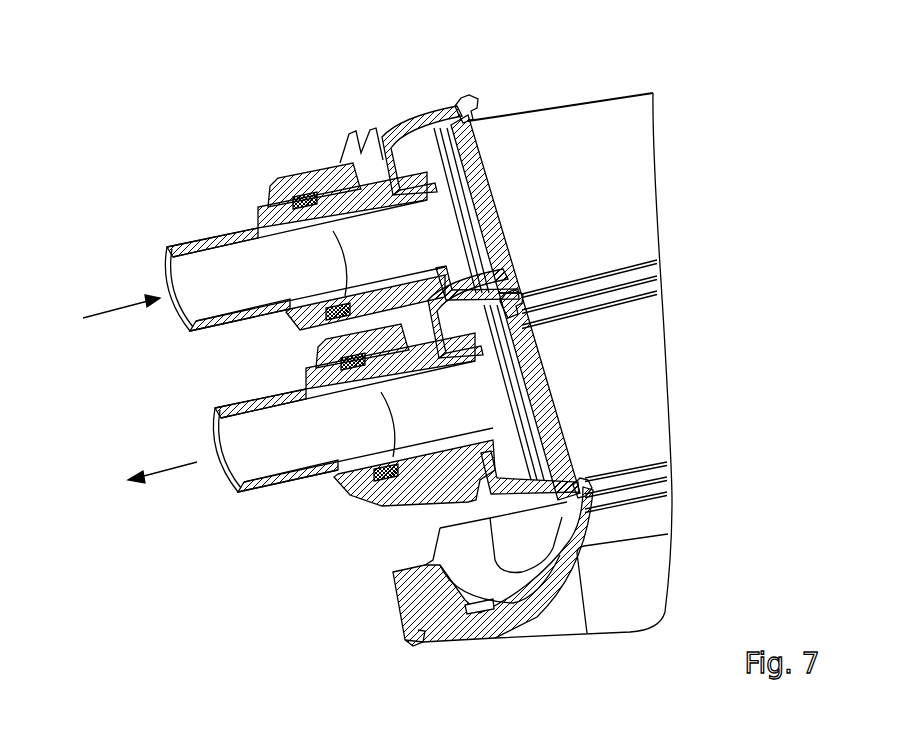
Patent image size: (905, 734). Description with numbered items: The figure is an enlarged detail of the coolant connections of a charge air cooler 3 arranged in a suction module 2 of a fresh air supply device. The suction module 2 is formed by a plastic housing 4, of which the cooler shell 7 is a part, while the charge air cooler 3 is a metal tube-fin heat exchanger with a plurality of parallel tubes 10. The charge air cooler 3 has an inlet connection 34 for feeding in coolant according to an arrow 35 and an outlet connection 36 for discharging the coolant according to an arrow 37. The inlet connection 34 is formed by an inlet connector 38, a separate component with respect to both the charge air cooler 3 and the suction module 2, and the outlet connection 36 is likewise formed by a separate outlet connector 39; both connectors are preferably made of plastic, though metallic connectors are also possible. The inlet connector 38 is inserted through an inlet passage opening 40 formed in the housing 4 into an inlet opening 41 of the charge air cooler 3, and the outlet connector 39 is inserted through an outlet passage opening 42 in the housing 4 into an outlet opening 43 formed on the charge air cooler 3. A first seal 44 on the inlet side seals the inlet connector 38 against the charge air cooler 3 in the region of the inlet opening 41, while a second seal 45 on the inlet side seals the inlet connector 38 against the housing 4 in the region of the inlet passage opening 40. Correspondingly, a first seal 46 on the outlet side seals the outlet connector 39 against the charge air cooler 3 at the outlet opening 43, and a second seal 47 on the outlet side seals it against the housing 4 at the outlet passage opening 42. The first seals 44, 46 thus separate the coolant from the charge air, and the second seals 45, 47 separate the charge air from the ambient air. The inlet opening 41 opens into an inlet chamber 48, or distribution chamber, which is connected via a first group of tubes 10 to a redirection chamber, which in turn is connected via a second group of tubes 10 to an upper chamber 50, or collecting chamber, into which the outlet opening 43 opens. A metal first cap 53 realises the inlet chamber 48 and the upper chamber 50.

The suction module 2 is at (378, 189).
The housing 4 is at (378, 189).
The charge air cooler 3 is at (550, 102).
The cooler shell 7 is at (413, 603).
The tubes 10 is at (595, 128).
The inlet connection 34 is at (173, 308).
The arrow 35 is at (113, 310).
The outlet connection 36 is at (199, 470).
The arrow 37 is at (167, 467).
The inlet connector 38 is at (273, 252).
The outlet connector 39 is at (325, 473).
The inlet passage opening 40 is at (362, 310).
The inlet opening 41 is at (455, 214).
The outlet passage opening 42 is at (415, 424).
The outlet opening 43 is at (480, 378).
The first seal on the inlet side 44 is at (377, 147).
The second seal on the inlet side 45 is at (300, 197).
The first seal on the outlet side 46 is at (497, 425).
The second seal on the outlet side 47 is at (406, 415).
The inlet chamber 48 is at (438, 110).
The upper chamber 50 is at (462, 306).
The first cap 53 is at (418, 150).